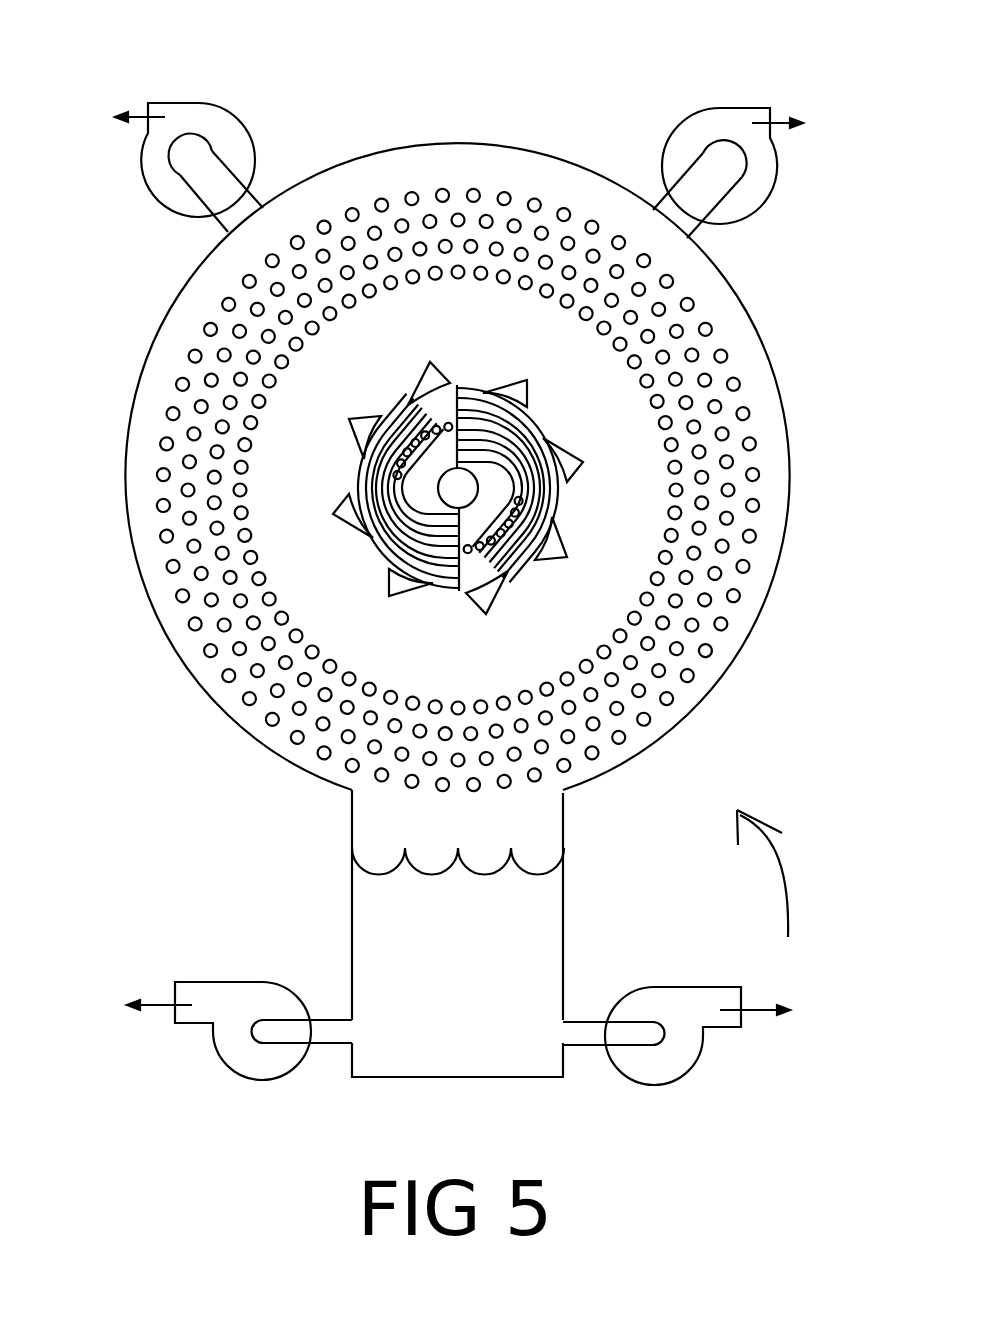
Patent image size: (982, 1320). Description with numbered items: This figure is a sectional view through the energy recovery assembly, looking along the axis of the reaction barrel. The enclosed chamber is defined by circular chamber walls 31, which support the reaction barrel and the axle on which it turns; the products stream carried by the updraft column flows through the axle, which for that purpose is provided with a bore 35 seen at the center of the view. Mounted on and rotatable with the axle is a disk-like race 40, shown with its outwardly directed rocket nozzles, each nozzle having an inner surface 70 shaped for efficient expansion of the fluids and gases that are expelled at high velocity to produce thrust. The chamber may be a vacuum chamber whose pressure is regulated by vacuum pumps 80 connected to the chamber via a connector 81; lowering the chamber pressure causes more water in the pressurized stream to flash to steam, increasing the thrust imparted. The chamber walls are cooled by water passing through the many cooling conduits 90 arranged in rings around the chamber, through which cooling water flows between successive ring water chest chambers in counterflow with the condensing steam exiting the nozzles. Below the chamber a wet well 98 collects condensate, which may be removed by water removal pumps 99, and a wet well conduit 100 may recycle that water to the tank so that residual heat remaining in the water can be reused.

The chamber walls 31 is at (247, 731).
The bore 35 is at (458, 488).
The disk-like race 40 is at (393, 405).
The inner surface 70 is at (778, 899).
The vacuum pumps 80 is at (207, 102).
The connector 81 is at (205, 173).
The cooling conduits 90 is at (352, 772).
The wet well 98 is at (458, 933).
The water removal pumps 99 is at (235, 982).
The wet well conduit 100 is at (165, 1010).